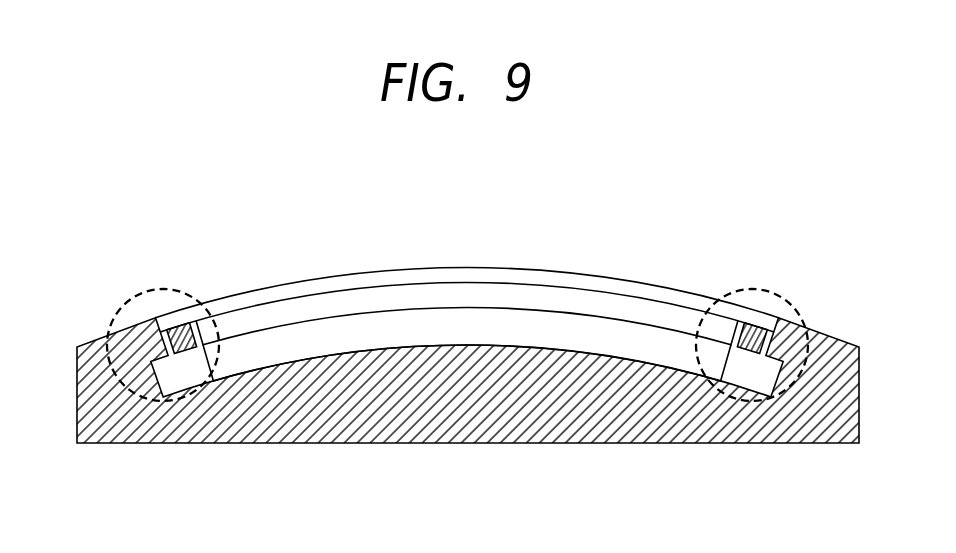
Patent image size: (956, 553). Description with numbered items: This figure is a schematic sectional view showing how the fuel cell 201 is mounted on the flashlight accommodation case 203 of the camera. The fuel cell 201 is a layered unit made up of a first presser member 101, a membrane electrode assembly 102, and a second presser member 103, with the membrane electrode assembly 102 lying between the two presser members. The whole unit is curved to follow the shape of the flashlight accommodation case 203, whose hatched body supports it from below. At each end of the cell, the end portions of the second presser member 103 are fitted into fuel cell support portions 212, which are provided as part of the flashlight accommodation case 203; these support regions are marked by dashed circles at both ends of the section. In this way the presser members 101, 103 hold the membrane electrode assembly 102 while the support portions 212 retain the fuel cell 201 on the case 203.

The fuel cell 201 is at (467, 260).
The first presser member 101 is at (431, 275).
The membrane electrode assembly (MEA) 102 is at (503, 293).
The second presser member 103 is at (540, 182).
The flashlight accommodation case 203 is at (505, 425).
The fuel cell support portions 212 is at (155, 290).